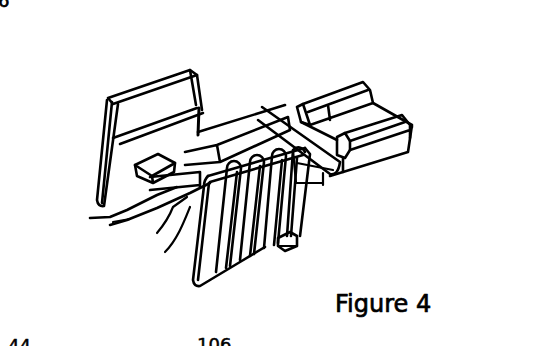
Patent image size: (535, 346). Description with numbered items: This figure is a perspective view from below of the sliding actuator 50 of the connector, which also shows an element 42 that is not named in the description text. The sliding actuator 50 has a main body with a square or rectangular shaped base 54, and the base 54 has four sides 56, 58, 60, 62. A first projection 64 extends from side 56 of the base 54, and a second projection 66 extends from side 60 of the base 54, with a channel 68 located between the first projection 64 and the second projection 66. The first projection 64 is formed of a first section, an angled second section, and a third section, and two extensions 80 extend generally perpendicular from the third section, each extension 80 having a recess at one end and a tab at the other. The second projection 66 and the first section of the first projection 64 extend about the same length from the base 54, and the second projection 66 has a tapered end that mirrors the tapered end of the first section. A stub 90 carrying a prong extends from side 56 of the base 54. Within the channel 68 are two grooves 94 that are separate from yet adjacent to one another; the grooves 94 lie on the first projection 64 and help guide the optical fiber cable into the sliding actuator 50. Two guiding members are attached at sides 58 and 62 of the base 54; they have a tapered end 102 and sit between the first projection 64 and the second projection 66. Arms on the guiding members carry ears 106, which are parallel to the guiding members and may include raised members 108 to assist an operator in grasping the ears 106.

The button 42 is at (173, 150).
The sliding actuator 50 is at (297, 31).
The base 54 is at (212, 115).
The side 56 is at (202, 128).
The side 58 is at (192, 143).
The side 60 is at (157, 233).
The side 62 is at (165, 252).
The first projection 64 is at (310, 172).
The second projection 66 is at (272, 108).
The channel 68 is at (108, 232).
The extension 80 is at (340, 86).
The stub 90 is at (97, 166).
The groove 94 is at (90, 218).
The tapered end 102 is at (298, 183).
The ear 106 is at (157, 73).
The raised member 108 is at (280, 238).